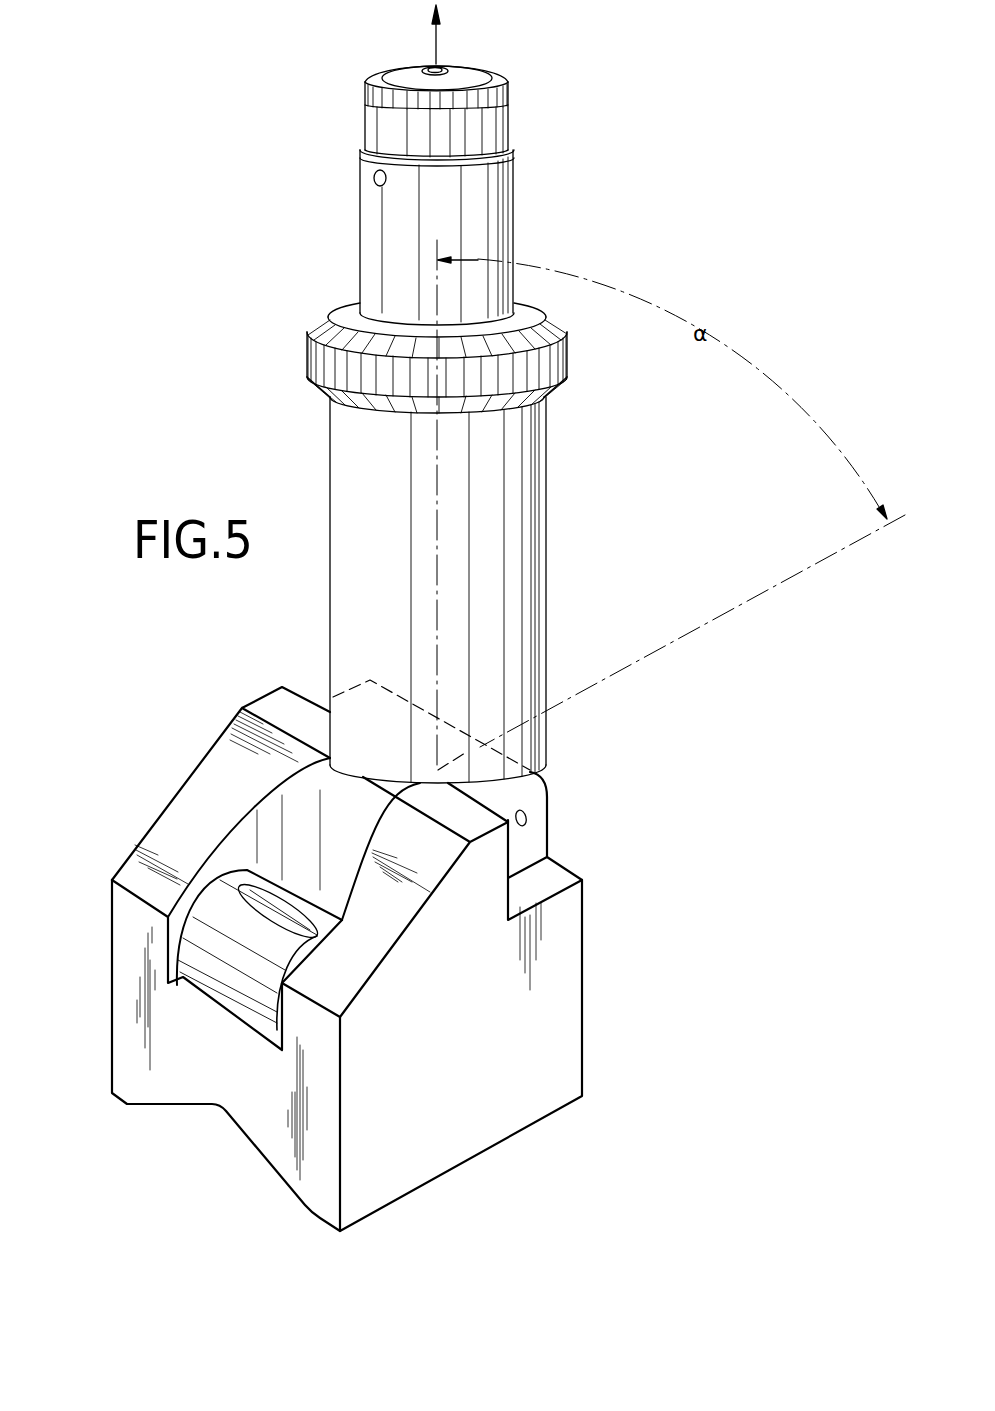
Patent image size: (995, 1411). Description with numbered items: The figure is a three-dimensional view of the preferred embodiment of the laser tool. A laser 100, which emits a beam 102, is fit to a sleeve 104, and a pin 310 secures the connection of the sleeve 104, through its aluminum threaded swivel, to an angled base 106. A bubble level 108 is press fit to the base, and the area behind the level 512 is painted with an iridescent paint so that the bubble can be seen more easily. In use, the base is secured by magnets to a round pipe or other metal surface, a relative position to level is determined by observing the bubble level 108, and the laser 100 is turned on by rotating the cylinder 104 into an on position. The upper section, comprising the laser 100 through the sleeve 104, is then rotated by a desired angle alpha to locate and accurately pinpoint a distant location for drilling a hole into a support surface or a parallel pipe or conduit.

The laser 100 is at (360, 218).
The beam 102 is at (433, 66).
The sleeve 104 is at (547, 543).
The angled base 106 is at (166, 808).
The bubble level 108 is at (182, 991).
The pin 310 is at (525, 825).
The area behind the level 512 is at (318, 843).